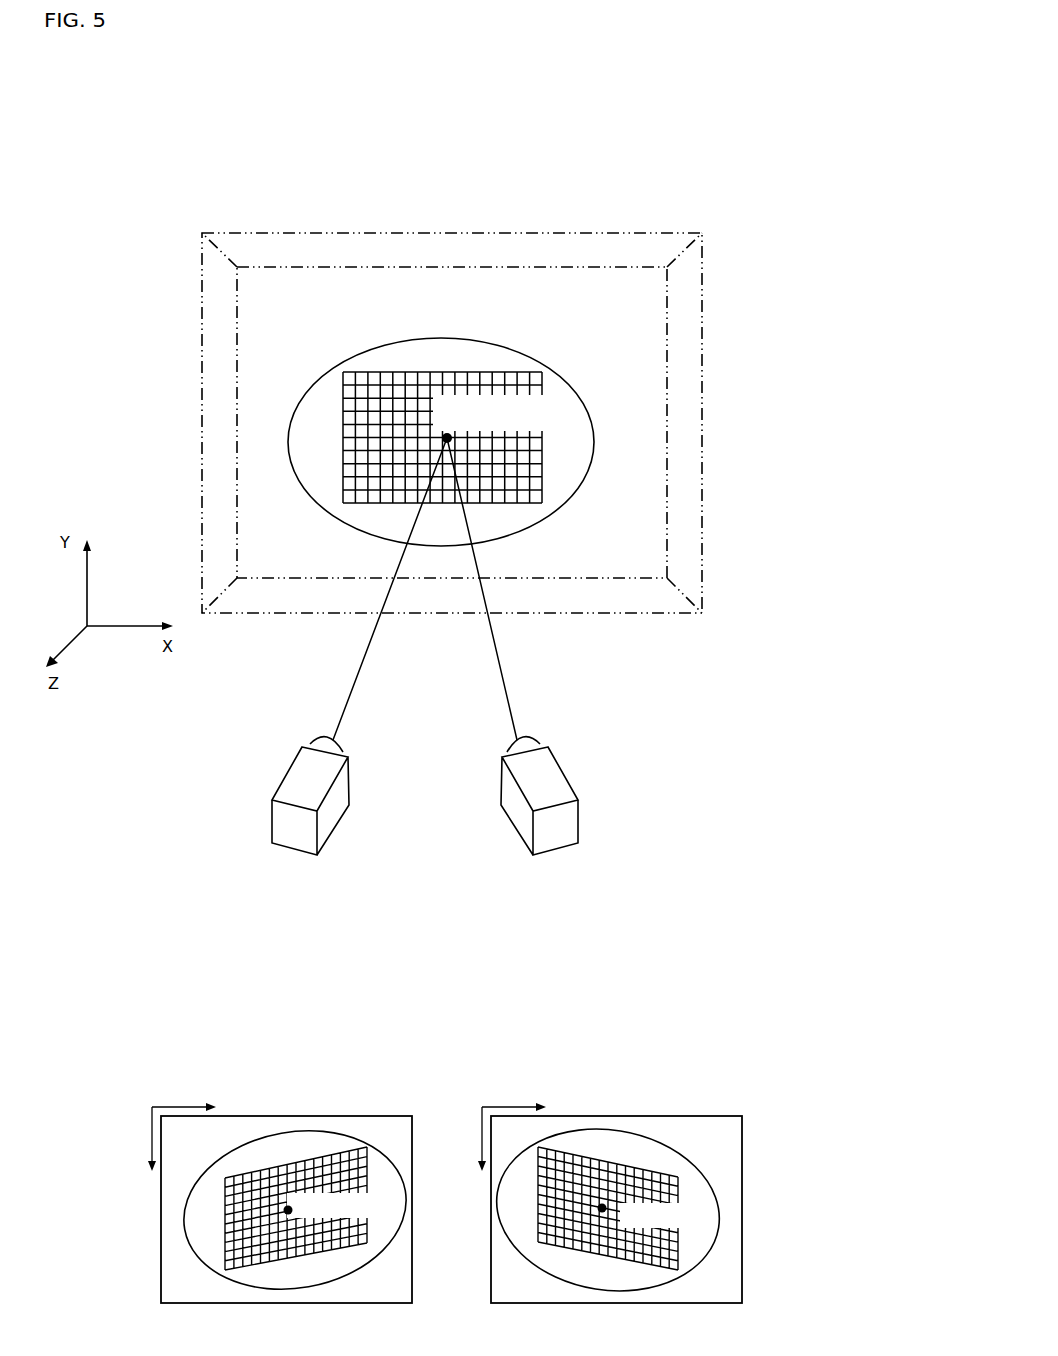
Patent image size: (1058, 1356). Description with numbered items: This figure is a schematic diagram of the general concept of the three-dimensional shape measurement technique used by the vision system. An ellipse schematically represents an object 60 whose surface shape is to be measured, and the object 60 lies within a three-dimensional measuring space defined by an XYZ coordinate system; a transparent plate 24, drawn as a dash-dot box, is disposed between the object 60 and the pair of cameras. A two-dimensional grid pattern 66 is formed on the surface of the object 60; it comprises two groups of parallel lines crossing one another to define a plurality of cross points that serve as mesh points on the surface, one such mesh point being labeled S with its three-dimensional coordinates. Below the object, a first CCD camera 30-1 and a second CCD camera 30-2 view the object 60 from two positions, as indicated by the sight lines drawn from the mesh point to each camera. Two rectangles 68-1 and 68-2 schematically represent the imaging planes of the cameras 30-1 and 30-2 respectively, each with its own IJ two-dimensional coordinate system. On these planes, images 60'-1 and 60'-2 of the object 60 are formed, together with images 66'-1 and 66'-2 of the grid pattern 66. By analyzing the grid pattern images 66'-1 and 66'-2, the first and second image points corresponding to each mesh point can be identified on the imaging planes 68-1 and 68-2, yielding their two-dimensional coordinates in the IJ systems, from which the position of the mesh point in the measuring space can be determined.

The transparent plate 24 is at (685, 400).
The object 60 is at (441, 417).
The grid pattern 66 is at (496, 394).
The first CCD camera 30-1 is at (303, 767).
The second CCD camera 30-2 is at (547, 767).
The imaging plane of first CCD camera 68-1 is at (388, 1116).
The image of the object on first imaging plane 60'-1 is at (295, 1169).
The image of the grid pattern on first imaging plane 66'-1 is at (275, 1135).
The imaging plane of second CCD camera 68-2 is at (727, 1116).
The image of the object on second imaging plane 60'-2 is at (608, 1152).
The image of the grid pattern on second imaging plane 66'-2 is at (602, 1151).